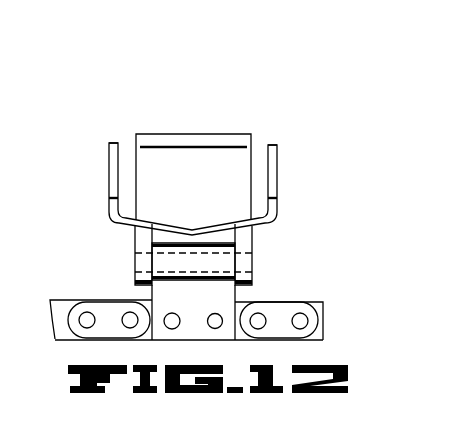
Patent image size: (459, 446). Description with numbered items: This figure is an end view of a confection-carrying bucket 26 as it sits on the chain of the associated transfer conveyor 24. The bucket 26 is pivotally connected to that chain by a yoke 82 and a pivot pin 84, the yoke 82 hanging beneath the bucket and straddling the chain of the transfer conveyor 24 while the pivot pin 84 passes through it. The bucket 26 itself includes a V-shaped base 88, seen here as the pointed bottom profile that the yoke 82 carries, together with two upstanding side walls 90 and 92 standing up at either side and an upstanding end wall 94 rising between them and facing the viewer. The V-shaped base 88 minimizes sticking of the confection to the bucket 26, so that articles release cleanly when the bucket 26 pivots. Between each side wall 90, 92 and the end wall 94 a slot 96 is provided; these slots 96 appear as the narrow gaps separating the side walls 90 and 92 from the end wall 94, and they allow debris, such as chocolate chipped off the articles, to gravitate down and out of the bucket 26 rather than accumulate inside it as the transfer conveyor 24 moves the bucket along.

The transfer conveyor 24 is at (287, 297).
The bucket 26 is at (190, 148).
The yoke 82 is at (214, 237).
The pivot pin 84 is at (175, 252).
The V-shaped base 88 is at (218, 224).
The side wall 90 is at (108, 177).
The side wall 92 is at (277, 185).
The end wall 94 is at (198, 150).
The slots 96 is at (135, 150).